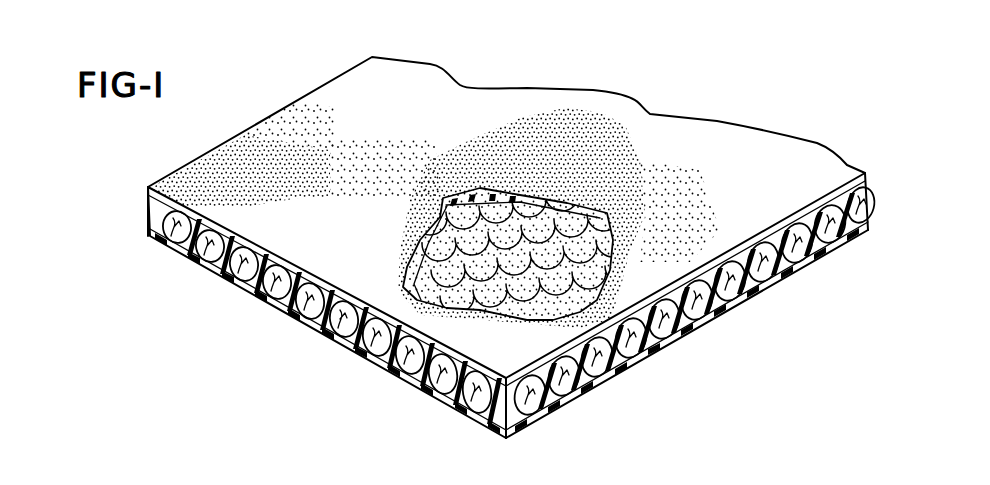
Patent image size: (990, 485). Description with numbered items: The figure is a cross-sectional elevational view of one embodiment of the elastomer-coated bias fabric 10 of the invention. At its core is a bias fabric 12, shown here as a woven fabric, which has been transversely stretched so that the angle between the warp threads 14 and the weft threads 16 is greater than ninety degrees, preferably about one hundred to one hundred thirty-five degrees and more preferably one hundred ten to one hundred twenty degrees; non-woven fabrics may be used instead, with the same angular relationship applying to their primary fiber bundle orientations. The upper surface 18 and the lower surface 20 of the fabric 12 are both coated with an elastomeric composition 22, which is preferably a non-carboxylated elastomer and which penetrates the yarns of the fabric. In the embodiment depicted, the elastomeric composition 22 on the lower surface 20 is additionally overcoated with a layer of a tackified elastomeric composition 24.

The elastomer-coated bias fabric 10 is at (719, 117).
The bias fabric 12 is at (520, 257).
The warp threads 14 is at (397, 367).
The weft threads 16 is at (772, 278).
The upper surface 18 is at (224, 182).
The lower surface 20 is at (186, 262).
The elastomeric composition 22 is at (295, 304).
The tackified elastomeric composition 24 is at (575, 394).